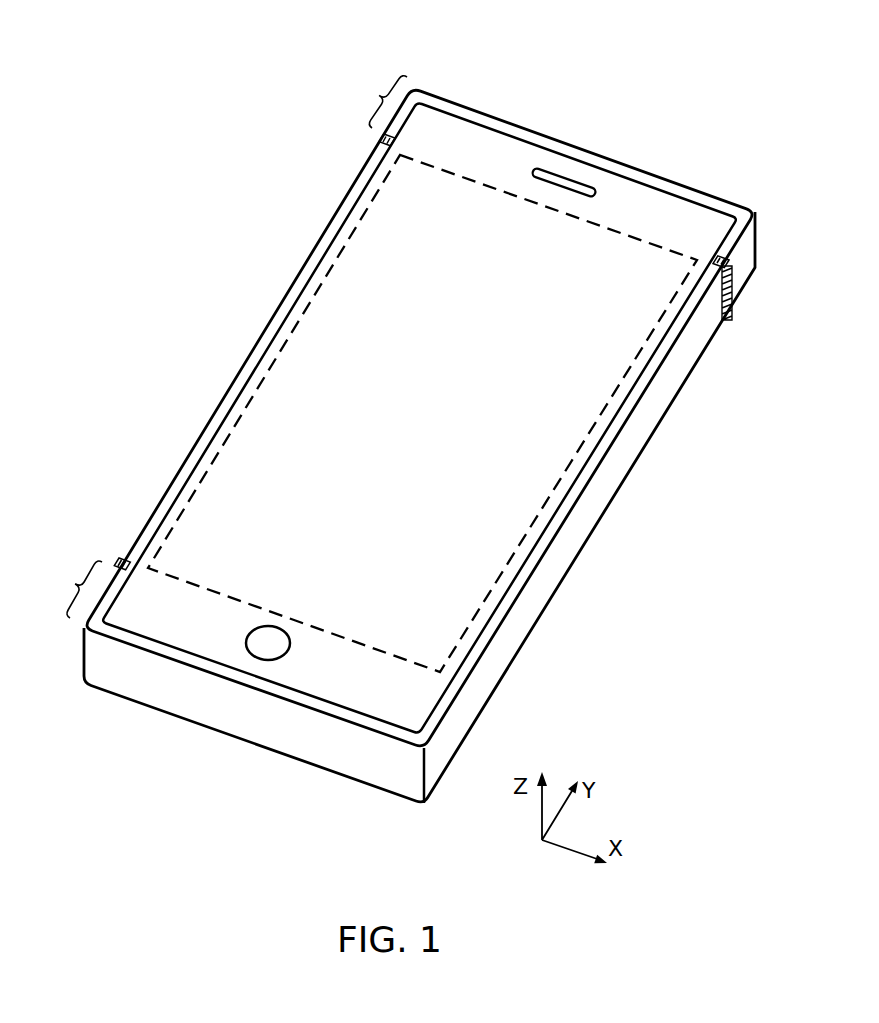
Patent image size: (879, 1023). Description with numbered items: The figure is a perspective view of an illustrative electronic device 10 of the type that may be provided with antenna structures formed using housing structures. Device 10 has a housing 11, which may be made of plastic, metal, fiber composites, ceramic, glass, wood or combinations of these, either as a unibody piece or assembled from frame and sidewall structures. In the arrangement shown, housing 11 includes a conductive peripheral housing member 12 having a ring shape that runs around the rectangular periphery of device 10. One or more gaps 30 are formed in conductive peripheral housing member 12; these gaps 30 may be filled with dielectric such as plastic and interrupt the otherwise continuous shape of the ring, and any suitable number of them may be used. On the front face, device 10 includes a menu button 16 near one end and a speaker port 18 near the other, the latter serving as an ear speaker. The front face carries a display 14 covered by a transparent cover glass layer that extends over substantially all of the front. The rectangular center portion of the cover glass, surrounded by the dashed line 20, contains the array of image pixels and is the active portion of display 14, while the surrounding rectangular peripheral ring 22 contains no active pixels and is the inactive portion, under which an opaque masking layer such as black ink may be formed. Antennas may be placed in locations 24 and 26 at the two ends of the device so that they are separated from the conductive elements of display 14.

The electronic device 10 is at (741, 53).
The housing 11 is at (768, 196).
The conductive peripheral housing member 12 is at (742, 260).
The display 14 is at (545, 422).
The menu button 16 is at (268, 661).
The speaker port 18 is at (565, 178).
The dashed line 20 is at (528, 533).
The rectangular peripheral ring 22 is at (645, 205).
The location 24 is at (377, 102).
The location 26 is at (71, 589).
The gaps 30 is at (366, 137).